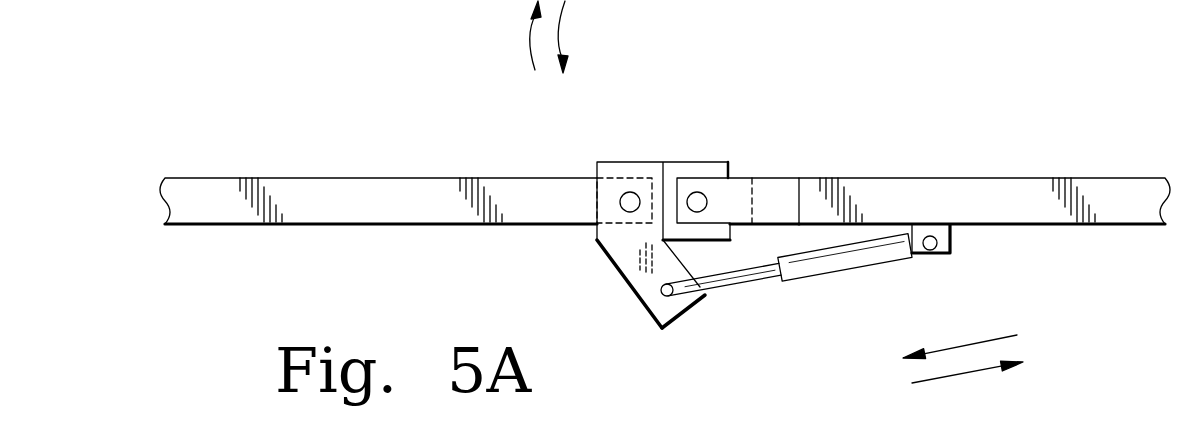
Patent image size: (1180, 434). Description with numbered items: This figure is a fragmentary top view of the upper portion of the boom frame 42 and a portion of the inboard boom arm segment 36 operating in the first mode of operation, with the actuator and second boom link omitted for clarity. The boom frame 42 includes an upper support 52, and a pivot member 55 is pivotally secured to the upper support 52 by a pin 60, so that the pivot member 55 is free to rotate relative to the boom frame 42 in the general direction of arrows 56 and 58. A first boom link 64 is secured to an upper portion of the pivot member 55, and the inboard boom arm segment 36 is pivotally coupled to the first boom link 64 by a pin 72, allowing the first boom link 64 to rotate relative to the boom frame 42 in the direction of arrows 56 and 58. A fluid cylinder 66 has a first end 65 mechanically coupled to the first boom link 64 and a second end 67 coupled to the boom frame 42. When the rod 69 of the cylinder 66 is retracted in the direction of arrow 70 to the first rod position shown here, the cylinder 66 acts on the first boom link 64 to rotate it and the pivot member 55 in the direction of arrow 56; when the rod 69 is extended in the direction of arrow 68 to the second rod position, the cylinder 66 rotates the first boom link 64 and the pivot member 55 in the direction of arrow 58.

The inboard boom arm segment 36 is at (320, 185).
The boom frame 42 is at (975, 188).
The upper support 52 is at (795, 178).
The pivot member 55 is at (690, 160).
The arrow 56 is at (558, 27).
The arrow 58 is at (528, 38).
The pin 60 is at (707, 203).
The first boom link 64 is at (633, 275).
The first end 65 is at (688, 300).
The fluid cylinder 66 is at (852, 265).
The second end 67 is at (937, 245).
The arrow 68 is at (970, 343).
The rod 69 is at (757, 272).
The arrow 70 is at (960, 372).
The pin 72 is at (630, 212).